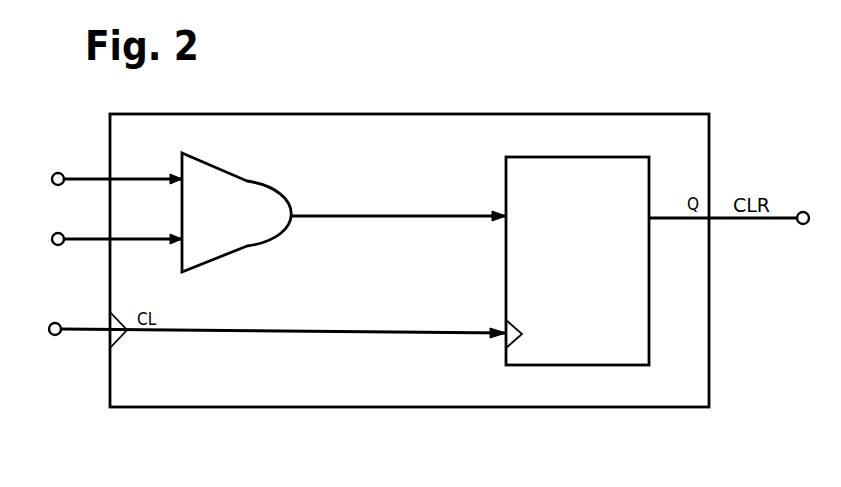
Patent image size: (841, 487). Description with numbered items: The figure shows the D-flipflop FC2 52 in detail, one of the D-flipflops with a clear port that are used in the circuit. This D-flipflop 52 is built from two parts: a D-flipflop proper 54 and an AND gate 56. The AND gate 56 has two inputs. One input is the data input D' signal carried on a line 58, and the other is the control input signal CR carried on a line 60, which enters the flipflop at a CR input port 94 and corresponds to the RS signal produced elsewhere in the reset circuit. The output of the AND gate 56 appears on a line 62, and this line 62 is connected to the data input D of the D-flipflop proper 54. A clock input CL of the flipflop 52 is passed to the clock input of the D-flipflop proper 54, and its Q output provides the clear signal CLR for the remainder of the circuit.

The D-flipflop FC2 52 is at (576, 408).
The D-flipflop proper 54 is at (506, 191).
The AND gate 56 is at (268, 242).
The line 58 is at (80, 243).
The line 60 is at (76, 182).
The line 62 is at (366, 219).
The CR input port 94 is at (53, 173).